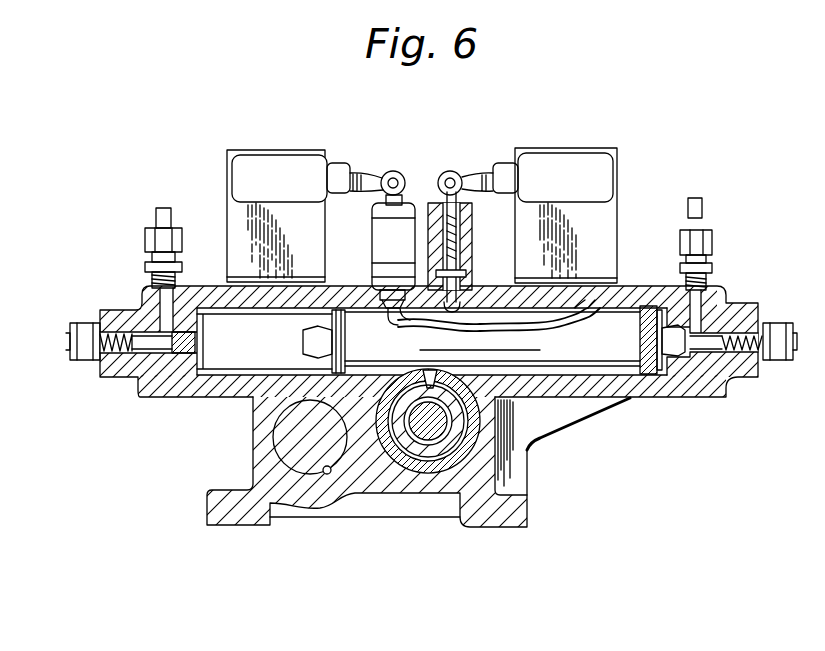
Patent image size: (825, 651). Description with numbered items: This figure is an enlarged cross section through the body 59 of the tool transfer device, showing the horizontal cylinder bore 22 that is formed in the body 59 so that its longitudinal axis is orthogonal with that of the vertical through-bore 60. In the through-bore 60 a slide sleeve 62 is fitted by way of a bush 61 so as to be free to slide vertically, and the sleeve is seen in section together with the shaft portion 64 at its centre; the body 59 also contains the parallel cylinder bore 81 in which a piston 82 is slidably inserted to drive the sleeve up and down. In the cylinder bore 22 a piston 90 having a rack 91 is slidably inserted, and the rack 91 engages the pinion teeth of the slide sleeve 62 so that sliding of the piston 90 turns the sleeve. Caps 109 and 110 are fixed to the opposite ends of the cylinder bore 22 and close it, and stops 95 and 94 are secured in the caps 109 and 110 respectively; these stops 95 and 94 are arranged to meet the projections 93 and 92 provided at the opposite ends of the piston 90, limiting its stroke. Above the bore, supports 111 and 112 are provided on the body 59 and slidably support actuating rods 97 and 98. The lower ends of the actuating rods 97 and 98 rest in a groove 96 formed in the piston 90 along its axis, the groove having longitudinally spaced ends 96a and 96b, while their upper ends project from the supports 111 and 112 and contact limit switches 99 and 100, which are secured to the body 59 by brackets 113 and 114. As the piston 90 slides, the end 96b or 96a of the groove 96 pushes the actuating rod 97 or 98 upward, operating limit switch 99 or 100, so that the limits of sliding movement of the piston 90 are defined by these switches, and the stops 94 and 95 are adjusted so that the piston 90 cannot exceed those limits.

The cylinder bore 22 is at (225, 378).
The body 59 is at (497, 517).
The through-bore 60 is at (440, 480).
The bush 61 is at (380, 432).
The slide sleeve 62 is at (425, 430).
The shaft 64 is at (432, 434).
The cylinder bore 81 is at (327, 475).
The piston 82 is at (307, 460).
The piston 90 is at (597, 360).
The rack 91 is at (533, 400).
The projection 92 is at (655, 362).
The projection 93 is at (300, 340).
The stop 94 is at (722, 385).
The stop 95 is at (150, 335).
The groove 96 is at (558, 312).
The groove end 96a is at (363, 341).
The groove end 96b is at (573, 303).
The actuating rod 97 is at (483, 300).
The actuating rod 98 is at (385, 297).
The limit switch 99 is at (573, 163).
The limit switch 100 is at (275, 165).
The cap 109 is at (145, 395).
The cap 110 is at (750, 306).
The support 111 is at (433, 207).
The support 112 is at (400, 205).
The bracket 113 is at (237, 213).
The bracket 114 is at (605, 215).